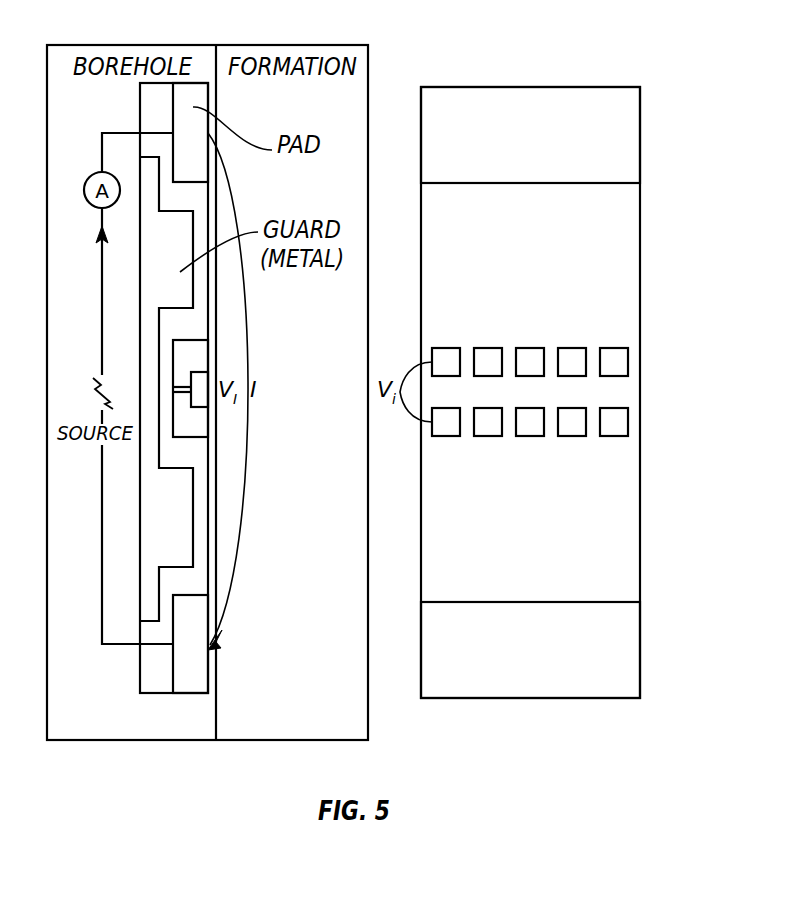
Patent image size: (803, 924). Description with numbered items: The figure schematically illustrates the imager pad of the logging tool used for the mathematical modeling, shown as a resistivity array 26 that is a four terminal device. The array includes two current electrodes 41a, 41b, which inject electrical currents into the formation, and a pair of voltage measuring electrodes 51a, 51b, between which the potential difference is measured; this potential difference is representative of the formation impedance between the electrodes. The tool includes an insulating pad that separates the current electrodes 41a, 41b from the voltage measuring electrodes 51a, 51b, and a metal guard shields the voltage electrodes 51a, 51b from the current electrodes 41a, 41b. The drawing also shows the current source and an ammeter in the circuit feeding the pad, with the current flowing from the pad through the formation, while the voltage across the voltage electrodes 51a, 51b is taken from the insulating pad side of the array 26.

The resistivity array 26 is at (622, 79).
The current electrode 41a is at (640, 136).
The current electrode 41b is at (640, 648).
The voltage measuring electrode 51a is at (445, 436).
The voltage measuring electrode 51b is at (445, 348).